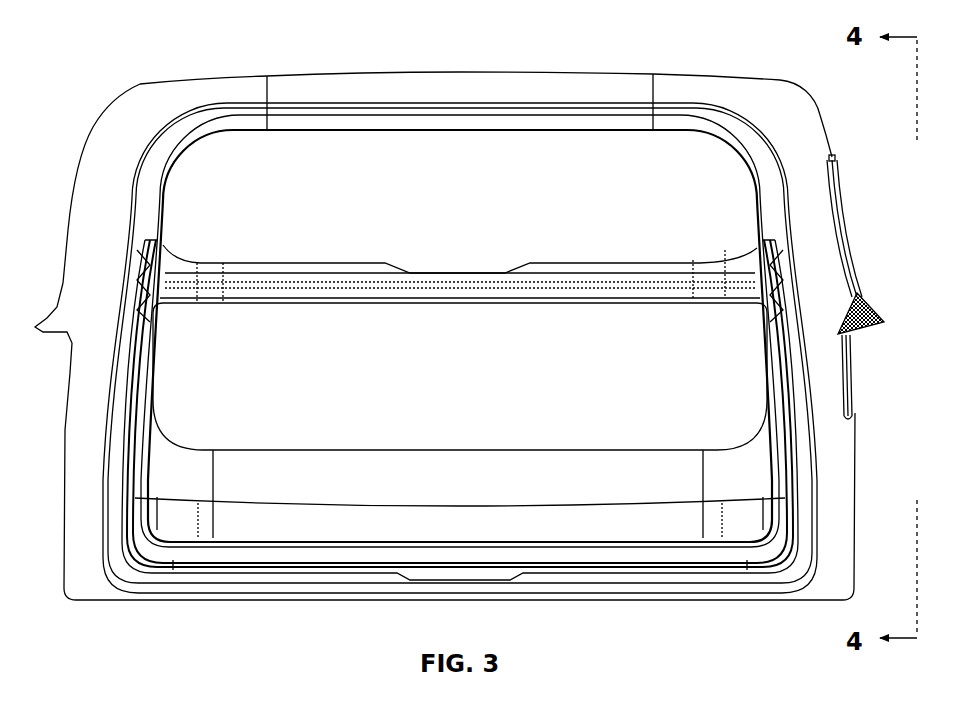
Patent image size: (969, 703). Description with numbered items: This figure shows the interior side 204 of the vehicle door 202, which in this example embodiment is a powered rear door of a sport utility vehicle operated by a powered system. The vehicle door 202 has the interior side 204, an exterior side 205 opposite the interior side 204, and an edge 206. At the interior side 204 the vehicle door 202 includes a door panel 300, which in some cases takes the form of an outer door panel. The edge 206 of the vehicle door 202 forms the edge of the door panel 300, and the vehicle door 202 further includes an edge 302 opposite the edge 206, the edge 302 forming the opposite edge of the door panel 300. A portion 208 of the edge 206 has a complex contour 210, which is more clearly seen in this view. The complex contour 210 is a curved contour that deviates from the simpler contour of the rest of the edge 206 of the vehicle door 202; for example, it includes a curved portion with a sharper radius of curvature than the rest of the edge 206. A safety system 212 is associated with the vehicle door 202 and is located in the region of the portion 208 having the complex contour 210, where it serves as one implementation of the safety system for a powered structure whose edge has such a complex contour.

The vehicle door 202 is at (138, 78).
The interior side 204 is at (206, 94).
The exterior side 205 is at (326, 70).
The edge 206 is at (818, 110).
The portion 208 is at (873, 296).
The complex contour 210 is at (894, 322).
The safety system 212 is at (868, 337).
The door panel 300 is at (720, 79).
The edge 302 is at (59, 266).